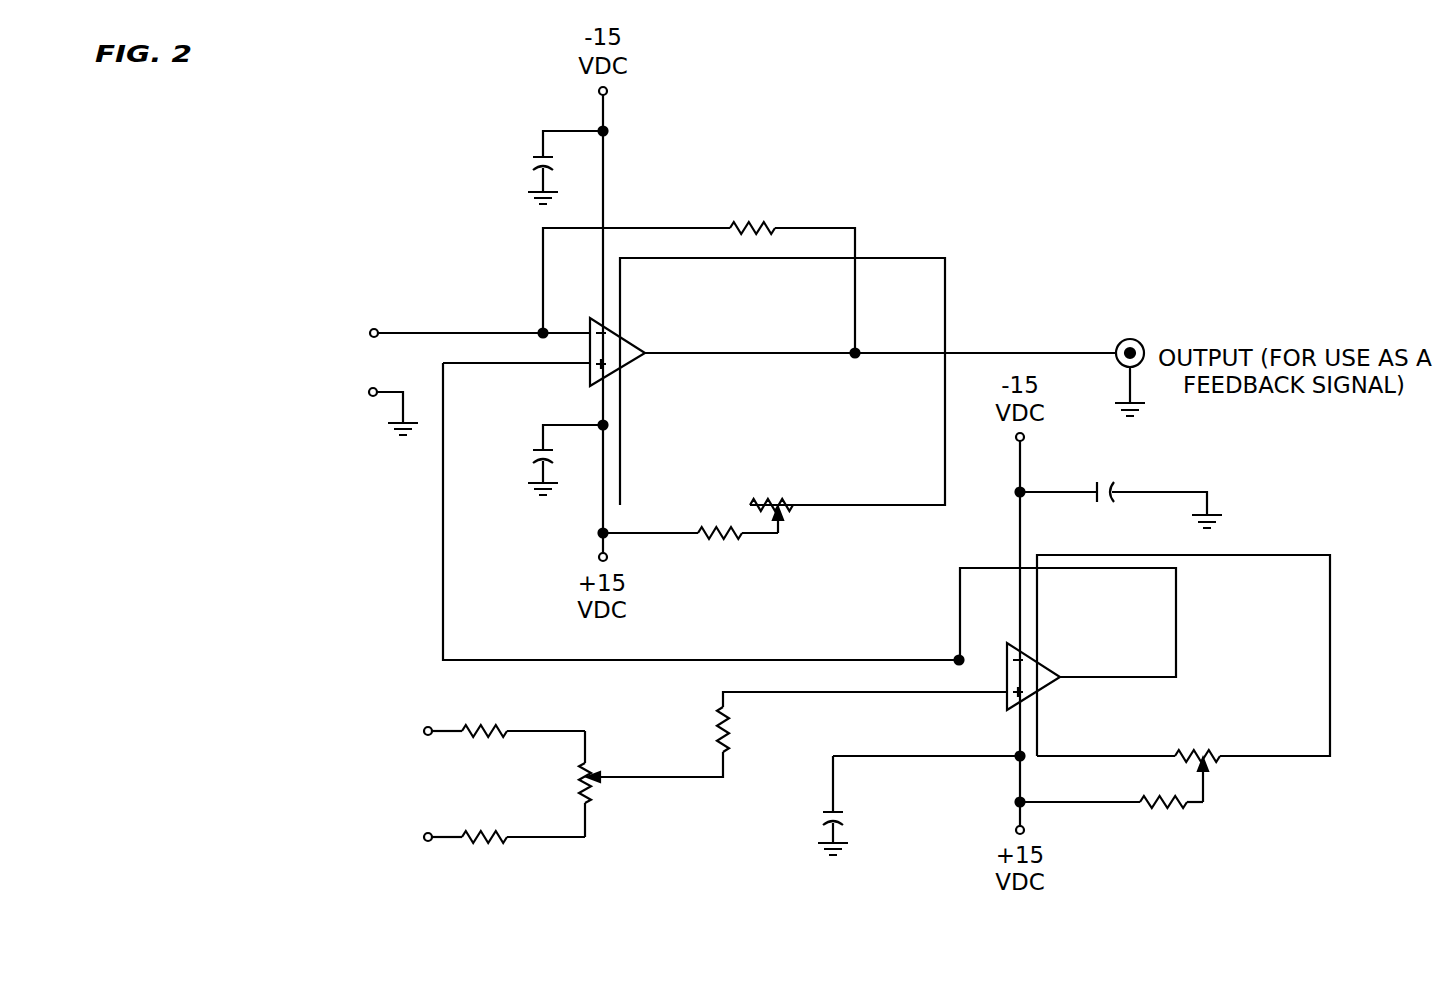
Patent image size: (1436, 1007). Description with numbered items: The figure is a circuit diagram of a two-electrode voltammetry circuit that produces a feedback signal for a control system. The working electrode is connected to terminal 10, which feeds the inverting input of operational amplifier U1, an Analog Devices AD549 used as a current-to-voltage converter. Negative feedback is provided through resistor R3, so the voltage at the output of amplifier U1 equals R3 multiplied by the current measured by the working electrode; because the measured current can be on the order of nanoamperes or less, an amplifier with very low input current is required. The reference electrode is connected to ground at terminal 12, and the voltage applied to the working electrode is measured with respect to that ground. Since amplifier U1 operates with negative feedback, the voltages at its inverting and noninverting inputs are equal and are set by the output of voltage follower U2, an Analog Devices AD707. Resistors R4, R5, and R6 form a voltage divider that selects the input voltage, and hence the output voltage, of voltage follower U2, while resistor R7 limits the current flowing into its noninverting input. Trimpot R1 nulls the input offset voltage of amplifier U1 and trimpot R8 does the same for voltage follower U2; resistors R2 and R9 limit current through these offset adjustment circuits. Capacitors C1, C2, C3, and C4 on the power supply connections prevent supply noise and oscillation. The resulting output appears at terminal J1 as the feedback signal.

The terminal 10 is at (343, 322).
The terminal 12 is at (243, 407).
The operational amplifier U1 is at (644, 348).
The voltage follower U2 is at (1059, 667).
The terminal J1 is at (1130, 361).
The capacitor C1 is at (531, 167).
The capacitor C2 is at (529, 458).
The capacitor C3 is at (1121, 494).
The capacitor C4 is at (904, 805).
The trimpot R1 is at (812, 487).
The resistor R2 is at (690, 564).
The resistor R3 is at (701, 261).
The resistor R4 is at (452, 730).
The resistor R5 is at (453, 836).
The resistor R6 is at (666, 784).
The resistor R7 is at (746, 744).
The trimpot R8 is at (1235, 747).
The resistor R9 is at (1113, 833).